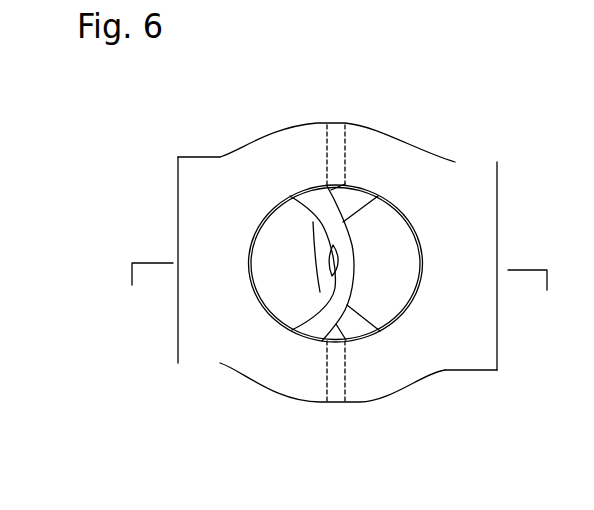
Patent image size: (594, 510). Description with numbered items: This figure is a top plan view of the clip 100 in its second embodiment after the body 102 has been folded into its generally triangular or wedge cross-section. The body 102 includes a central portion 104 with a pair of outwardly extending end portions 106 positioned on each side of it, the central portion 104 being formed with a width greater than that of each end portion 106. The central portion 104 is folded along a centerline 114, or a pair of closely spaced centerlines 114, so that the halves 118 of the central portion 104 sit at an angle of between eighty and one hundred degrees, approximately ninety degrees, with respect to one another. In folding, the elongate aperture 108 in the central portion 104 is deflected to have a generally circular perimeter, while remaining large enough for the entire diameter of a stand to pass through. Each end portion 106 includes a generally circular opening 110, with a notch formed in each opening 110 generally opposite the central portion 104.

The clip 100 is at (388, 70).
The body 102 is at (282, 404).
The central portion 104 is at (400, 146).
The end portions 106 is at (335, 228).
The elongate aperture 108 is at (265, 318).
The opening 110 is at (277, 259).
The centerline 114 is at (345, 118).
The halves 118 is at (213, 162).